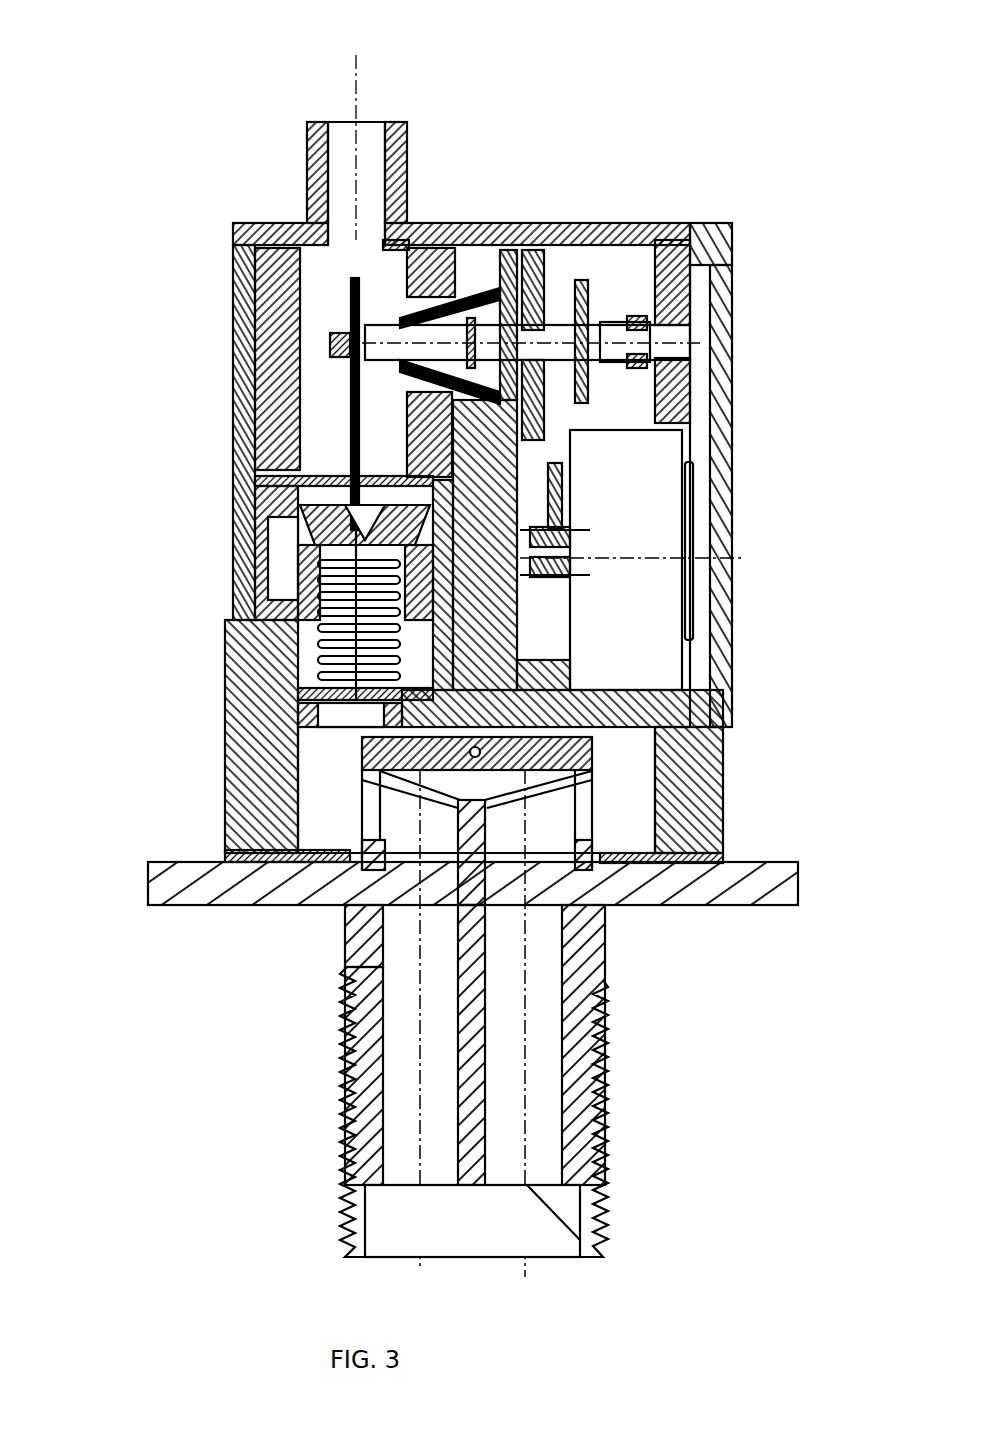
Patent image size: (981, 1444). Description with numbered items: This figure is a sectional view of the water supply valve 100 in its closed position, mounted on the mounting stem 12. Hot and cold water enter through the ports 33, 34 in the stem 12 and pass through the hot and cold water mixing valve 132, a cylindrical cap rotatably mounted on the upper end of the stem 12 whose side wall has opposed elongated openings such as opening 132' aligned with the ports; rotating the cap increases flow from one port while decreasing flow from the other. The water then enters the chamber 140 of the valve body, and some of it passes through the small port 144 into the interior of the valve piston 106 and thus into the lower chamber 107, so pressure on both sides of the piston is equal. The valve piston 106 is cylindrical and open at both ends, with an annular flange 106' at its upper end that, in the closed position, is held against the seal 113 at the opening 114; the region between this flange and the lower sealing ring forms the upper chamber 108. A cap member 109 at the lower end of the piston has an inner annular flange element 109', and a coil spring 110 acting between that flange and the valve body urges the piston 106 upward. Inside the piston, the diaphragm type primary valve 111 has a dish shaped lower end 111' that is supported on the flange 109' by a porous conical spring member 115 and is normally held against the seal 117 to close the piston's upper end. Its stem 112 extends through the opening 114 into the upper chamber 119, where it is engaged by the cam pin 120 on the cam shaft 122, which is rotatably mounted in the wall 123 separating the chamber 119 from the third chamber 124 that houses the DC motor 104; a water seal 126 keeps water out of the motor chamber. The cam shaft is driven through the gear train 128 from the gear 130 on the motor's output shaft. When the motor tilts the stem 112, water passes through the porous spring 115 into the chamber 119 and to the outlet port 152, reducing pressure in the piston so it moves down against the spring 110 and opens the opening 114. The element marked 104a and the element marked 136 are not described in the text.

The water supply valve 100 is at (553, 172).
The mounting stem 12 is at (367, 1023).
The port 33 is at (402, 1187).
The port 34 is at (580, 1240).
The DC motor 104 is at (648, 608).
The housing side wall 104a is at (695, 298).
The valve piston 106 is at (638, 552).
The annular flange 106' is at (182, 558).
The second lower chamber 107 is at (335, 727).
The first upper chamber 108 is at (290, 600).
The cap member 109 is at (633, 769).
The inner annular flange element 109' is at (174, 736).
The coil spring 110 is at (322, 806).
The diaphragm type primary valve 111 is at (213, 272).
The dish shaped lower end 111' is at (171, 558).
The stem 112 is at (352, 282).
The seal 113 is at (300, 478).
The opening 114 is at (330, 455).
The porous conical spring member 115 is at (300, 572).
The seal 117 is at (303, 533).
The upper chamber 119 is at (403, 293).
The cam pin 120 is at (380, 238).
The cam shaft 122 is at (608, 357).
The wall 123 is at (511, 225).
The third chamber 124 is at (615, 263).
The water seal 126 is at (575, 425).
The gear train 128 is at (567, 490).
The gear 130 is at (740, 560).
The hot and cold water mixing valve 132 is at (613, 764).
The elongated opening 132' is at (212, 1020).
The piston 136 is at (548, 780).
The chamber 140 is at (190, 905).
The small port 144 is at (327, 855).
The outlet port 152 is at (342, 142).